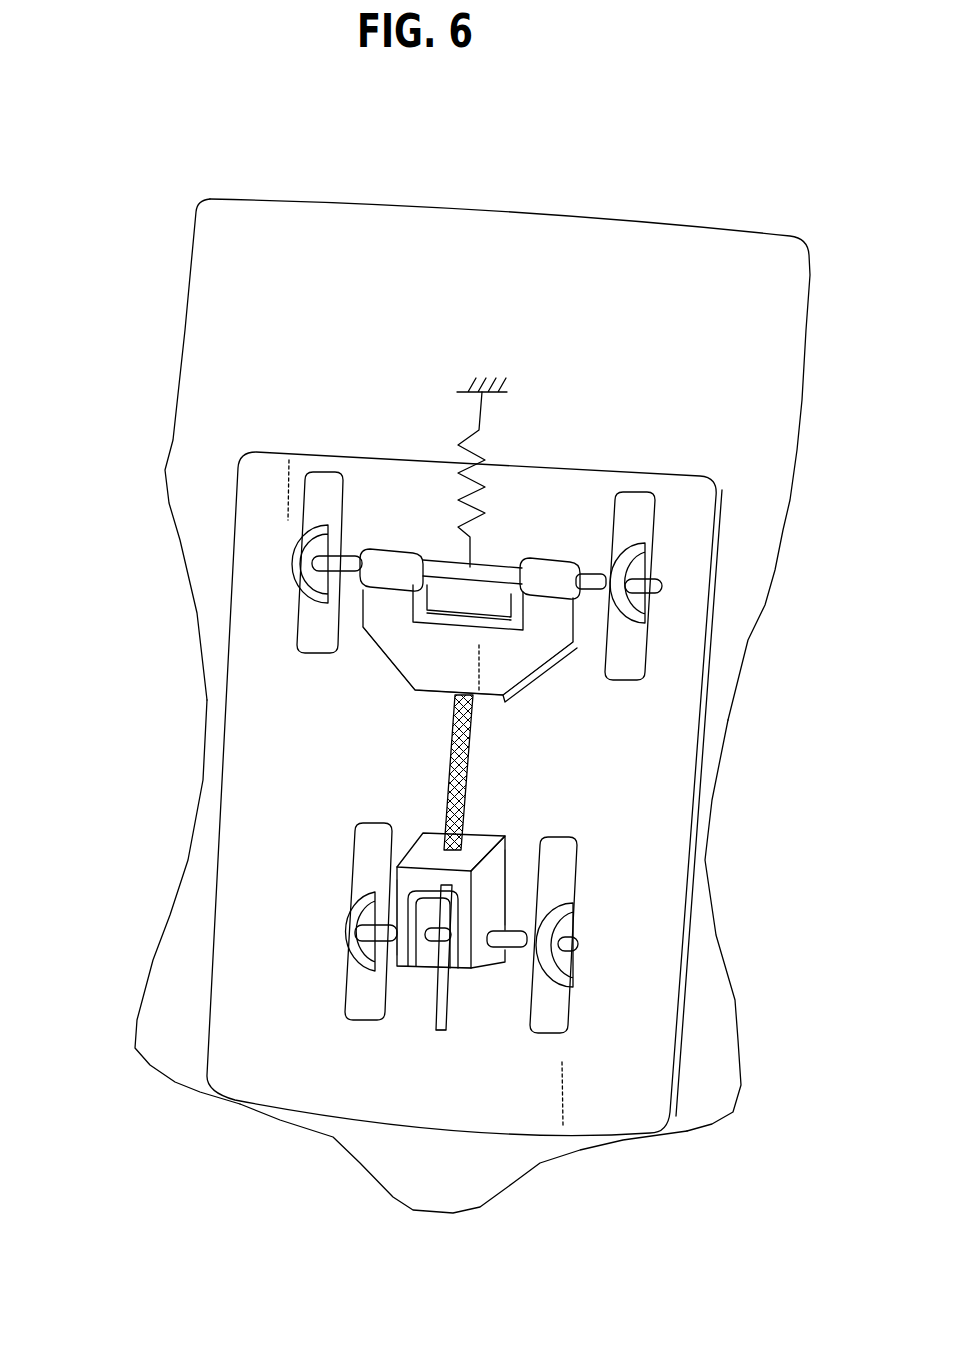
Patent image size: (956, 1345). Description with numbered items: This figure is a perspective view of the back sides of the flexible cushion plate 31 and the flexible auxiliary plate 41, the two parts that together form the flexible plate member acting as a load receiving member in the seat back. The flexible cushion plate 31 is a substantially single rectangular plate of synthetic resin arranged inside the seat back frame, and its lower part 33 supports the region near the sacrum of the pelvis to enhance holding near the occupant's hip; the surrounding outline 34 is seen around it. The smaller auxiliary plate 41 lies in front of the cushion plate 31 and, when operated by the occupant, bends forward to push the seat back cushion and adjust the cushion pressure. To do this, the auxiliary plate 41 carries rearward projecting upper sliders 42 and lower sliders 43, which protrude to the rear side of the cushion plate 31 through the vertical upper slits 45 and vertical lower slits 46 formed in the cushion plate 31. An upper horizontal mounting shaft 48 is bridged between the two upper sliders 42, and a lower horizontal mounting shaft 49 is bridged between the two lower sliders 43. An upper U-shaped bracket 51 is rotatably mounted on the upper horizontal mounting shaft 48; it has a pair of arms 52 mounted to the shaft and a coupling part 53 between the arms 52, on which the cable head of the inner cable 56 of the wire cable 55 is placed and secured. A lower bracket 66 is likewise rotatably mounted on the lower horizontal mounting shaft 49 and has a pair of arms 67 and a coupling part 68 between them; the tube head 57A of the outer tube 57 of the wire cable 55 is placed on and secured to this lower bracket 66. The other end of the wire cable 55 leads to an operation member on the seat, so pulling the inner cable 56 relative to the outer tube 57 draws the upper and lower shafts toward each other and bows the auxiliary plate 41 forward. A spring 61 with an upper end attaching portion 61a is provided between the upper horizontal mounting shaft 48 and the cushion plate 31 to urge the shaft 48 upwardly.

The flexible cushion plate 31 is at (163, 468).
The lower part 33 is at (452, 1140).
The seat base 34 is at (528, 208).
The flexible auxiliary plate 41 is at (352, 440).
The upper sliders 42 is at (300, 540).
The lower sliders 43 is at (340, 916).
The vertical upper slits 45 is at (320, 660).
The vertical lower slits 46 is at (340, 1000).
The upper horizontal mounting shaft 48 is at (352, 550).
The lower horizontal mounting shaft 49 is at (512, 950).
The upper U-shaped bracket 51 is at (552, 682).
The arms 52 is at (410, 550).
The coupling part 53 is at (410, 660).
The wire cable 55 is at (422, 1002).
The inner cable 56 is at (470, 745).
The outer tube 57 is at (449, 1007).
The tube head 57A is at (443, 880).
The spring 61 is at (490, 496).
The upper end attaching portion 61a is at (483, 396).
The lower bracket 66 is at (505, 812).
The arms 67 is at (400, 908).
The coupling part 68 is at (487, 843).